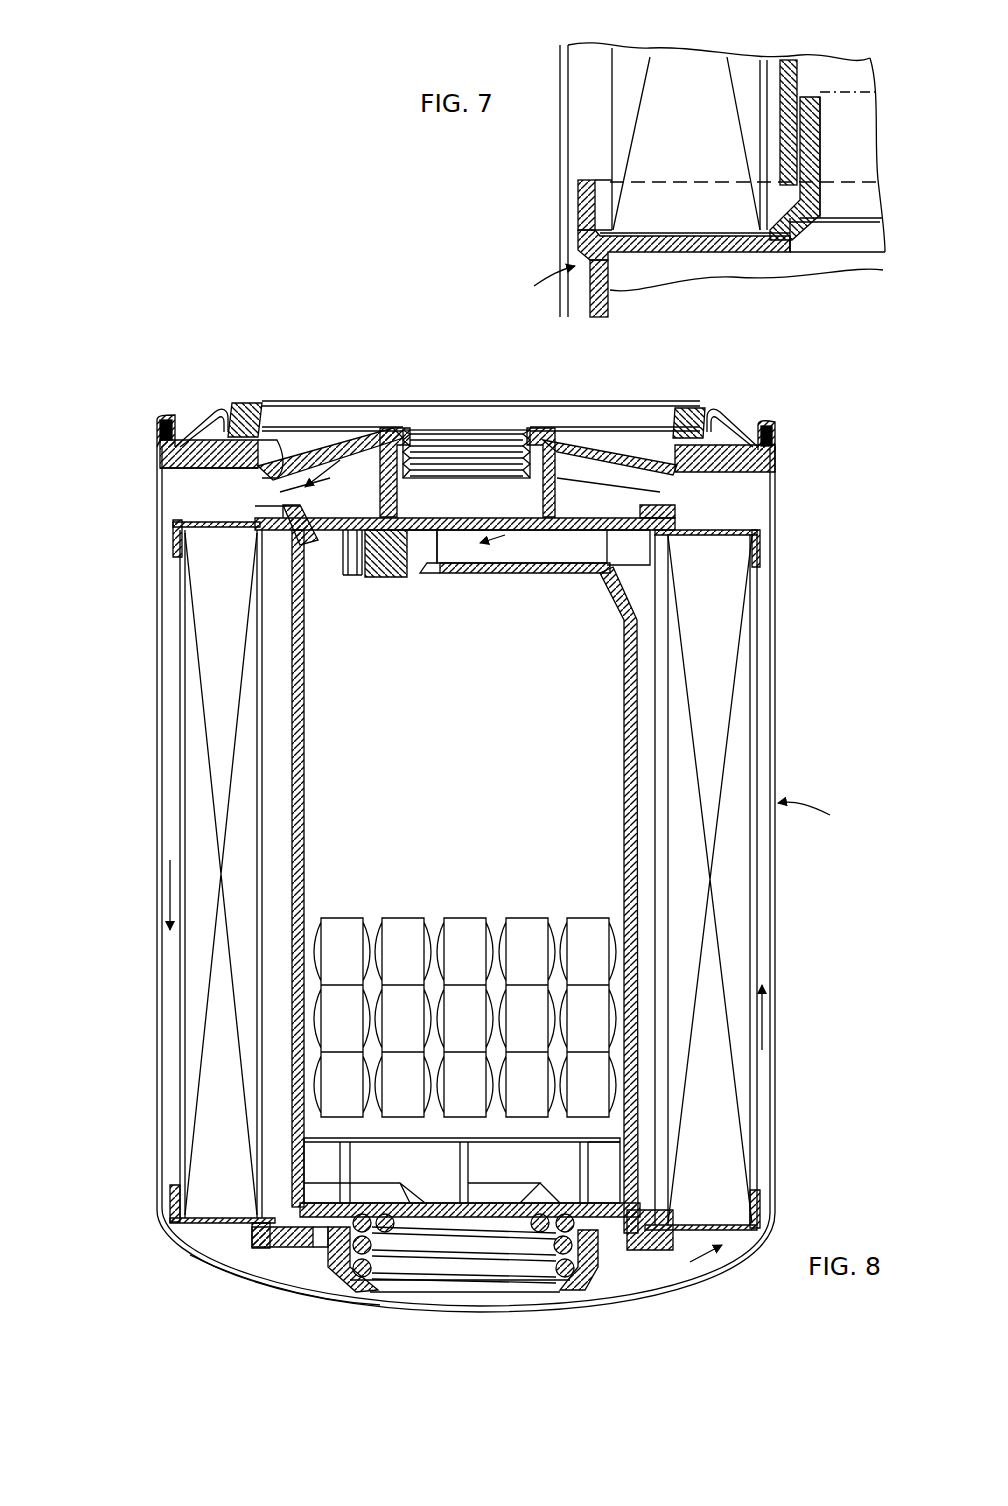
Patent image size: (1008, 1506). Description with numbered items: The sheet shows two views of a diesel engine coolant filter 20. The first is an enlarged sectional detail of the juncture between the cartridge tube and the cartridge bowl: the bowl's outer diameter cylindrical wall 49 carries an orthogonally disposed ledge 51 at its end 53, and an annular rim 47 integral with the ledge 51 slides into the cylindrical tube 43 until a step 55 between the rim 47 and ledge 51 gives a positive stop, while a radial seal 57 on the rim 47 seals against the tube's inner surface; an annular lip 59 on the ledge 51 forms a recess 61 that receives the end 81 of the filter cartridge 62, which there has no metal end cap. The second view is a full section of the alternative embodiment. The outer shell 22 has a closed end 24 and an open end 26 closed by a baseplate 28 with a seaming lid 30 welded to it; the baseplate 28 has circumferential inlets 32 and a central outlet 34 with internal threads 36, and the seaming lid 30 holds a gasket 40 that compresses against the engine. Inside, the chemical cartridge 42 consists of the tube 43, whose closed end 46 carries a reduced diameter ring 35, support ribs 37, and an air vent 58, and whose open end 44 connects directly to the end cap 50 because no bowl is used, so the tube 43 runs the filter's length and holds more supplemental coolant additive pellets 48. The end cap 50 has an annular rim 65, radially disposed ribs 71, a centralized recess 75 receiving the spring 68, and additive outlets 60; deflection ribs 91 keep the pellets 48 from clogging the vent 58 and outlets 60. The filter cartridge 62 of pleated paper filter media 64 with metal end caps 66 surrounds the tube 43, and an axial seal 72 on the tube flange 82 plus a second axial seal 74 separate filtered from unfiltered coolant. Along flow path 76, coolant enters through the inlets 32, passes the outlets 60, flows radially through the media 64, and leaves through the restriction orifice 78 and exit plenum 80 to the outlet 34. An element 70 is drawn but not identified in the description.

In FIG. 8, the filter 20 is at (208, 300).
In FIG. 8, the outer shell 22 is at (778, 705).
In FIG. 8, the closed end 24 is at (540, 1310).
In FIG. 8, the open end 26 is at (178, 406).
In FIG. 8, the baseplate 28 is at (170, 455).
In FIG. 8, the seaming lid 30 is at (175, 425).
In FIG. 8, the inlets 32 is at (300, 445).
In FIG. 8, the outlet 34 is at (483, 440).
In FIG. 8, the reduced diameter ring 35 is at (545, 468).
In FIG. 8, the internal threads 36 is at (405, 470).
In FIG. 8, the support ribs 37 is at (580, 470).
In FIG. 8, the gasket 40 is at (246, 415).
In FIG. 8, the chemical cartridge 42 is at (713, 520).
In FIG. 7, the cylindrical tube 43 is at (788, 68).
In FIG. 8, the cylindrical tube 43 is at (630, 785).
In FIG. 8, the open end 44 is at (640, 1085).
In FIG. 8, the closed end 46 is at (527, 540).
In FIG. 7, the annular rim 47 is at (810, 145).
In FIG. 8, the supplemental coolant additive pellets 48 is at (410, 935).
In FIG. 7, the cylindrical wall 49 is at (608, 285).
In FIG. 8, the end cap 50 is at (260, 1248).
In FIG. 7, the ledge 51 is at (738, 240).
In FIG. 7, the end 53 is at (537, 287).
In FIG. 7, the step 55 is at (790, 232).
In FIG. 7, the radial seal 57 is at (805, 95).
In FIG. 8, the air vent 58 is at (348, 530).
In FIG. 7, the annular lip 59 is at (585, 205).
In FIG. 8, the supplemental coolant additive outlets 60 is at (315, 1248).
In FIG. 7, the recess 61 is at (575, 240).
In FIG. 8, the filter cartridge 62 is at (827, 821).
In FIG. 7, the pleated paper filter media 64 is at (690, 75).
In FIG. 8, the pleated paper filter media 64 is at (735, 885).
In FIG. 8, the annular rim 65 is at (305, 1190).
In FIG. 8, the metal end cap 66 is at (762, 560).
In FIG. 8, the spring 68 is at (595, 1272).
In FIG. 8, the retainer 70 is at (340, 1290).
In FIG. 8, the radially disposed ribs 71 is at (540, 1200).
In FIG. 8, the axial seal 72 is at (255, 522).
In FIG. 8, the second axial seal 74 is at (262, 1235).
In FIG. 8, the centralized recess 75 is at (668, 1265).
In FIG. 8, the flow path 76 is at (340, 455).
In FIG. 8, the restriction orifice 78 is at (460, 530).
In FIG. 8, the exit plenum 80 is at (583, 545).
In FIG. 7, the end 81 is at (685, 210).
In FIG. 8, the flange 82 is at (672, 505).
In FIG. 8, the deflection ribs 91 is at (345, 578).